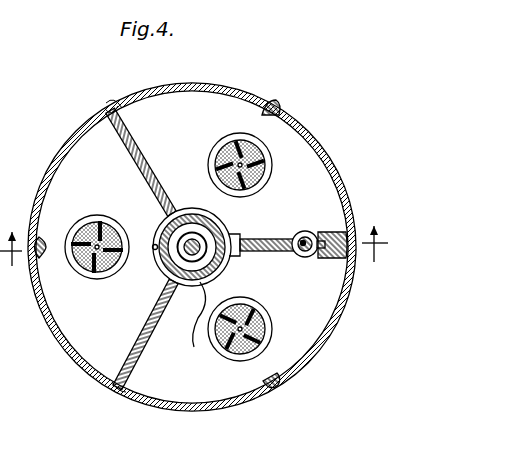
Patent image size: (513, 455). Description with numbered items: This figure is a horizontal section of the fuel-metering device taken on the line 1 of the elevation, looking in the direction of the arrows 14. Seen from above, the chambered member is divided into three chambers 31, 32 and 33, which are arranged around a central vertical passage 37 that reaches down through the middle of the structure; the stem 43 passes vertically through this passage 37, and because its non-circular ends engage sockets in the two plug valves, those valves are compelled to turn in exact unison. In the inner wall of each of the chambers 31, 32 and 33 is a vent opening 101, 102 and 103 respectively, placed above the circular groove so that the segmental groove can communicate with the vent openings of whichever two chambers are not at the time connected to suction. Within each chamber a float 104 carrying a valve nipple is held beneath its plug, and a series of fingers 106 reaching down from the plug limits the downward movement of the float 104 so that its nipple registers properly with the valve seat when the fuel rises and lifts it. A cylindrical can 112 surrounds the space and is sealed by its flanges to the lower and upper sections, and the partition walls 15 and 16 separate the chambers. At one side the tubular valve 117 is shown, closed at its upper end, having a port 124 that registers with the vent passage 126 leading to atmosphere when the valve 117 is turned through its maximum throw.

The section line 1 is at (194, 257).
The arrow direction 14 is at (120, 80).
The spoke 15 is at (204, 194).
The casing 16 is at (5, 193).
The chamber 31 is at (102, 315).
The chamber 32 is at (215, 372).
The chamber 33 is at (198, 112).
The central vertical passage 37 is at (186, 212).
The stem 43 is at (170, 230).
The vent opening 101 is at (156, 249).
The vent opening 102 is at (201, 305).
The vent opening 103 is at (306, 232).
The float 104 is at (258, 143).
The fingers 106 is at (258, 182).
The cylindrical can 112 is at (130, 396).
The tubular valve 117 is at (310, 228).
The port 124 is at (305, 258).
The vent passage 126 is at (330, 258).